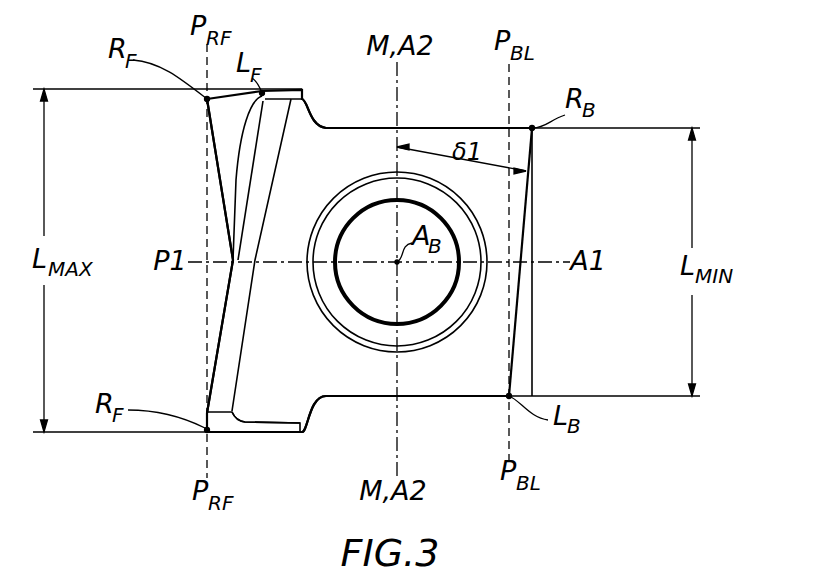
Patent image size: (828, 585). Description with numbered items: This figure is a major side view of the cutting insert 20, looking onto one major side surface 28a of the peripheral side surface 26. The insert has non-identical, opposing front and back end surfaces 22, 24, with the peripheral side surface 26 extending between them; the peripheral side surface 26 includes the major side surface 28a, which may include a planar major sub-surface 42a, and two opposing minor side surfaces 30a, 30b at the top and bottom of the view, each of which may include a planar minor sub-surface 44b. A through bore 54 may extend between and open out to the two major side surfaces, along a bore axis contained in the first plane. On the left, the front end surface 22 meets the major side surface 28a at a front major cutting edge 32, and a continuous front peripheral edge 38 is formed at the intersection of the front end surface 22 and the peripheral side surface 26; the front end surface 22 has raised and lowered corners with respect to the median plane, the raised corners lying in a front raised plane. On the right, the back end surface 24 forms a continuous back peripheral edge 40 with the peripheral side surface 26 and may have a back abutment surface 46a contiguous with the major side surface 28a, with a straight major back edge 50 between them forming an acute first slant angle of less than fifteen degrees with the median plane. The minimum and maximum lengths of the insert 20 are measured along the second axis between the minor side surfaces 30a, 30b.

The cutting insert 20 is at (538, 78).
The front end surface 22 is at (240, 175).
The back end surface 24 is at (523, 313).
The peripheral side surface 26 is at (276, 395).
The major side surface 28a is at (270, 369).
The minor side surface 30a is at (408, 126).
The minor side surface 30b is at (417, 398).
The front major cutting edge 32 is at (215, 150).
The front peripheral edge 38 is at (218, 343).
The back peripheral edge 40 is at (527, 226).
The major sub-surface 42a is at (377, 385).
The minor sub-surface 44b is at (360, 125).
The back abutment surface 46a is at (518, 358).
The major back edge 50 is at (532, 195).
The through bore 54 is at (353, 297).